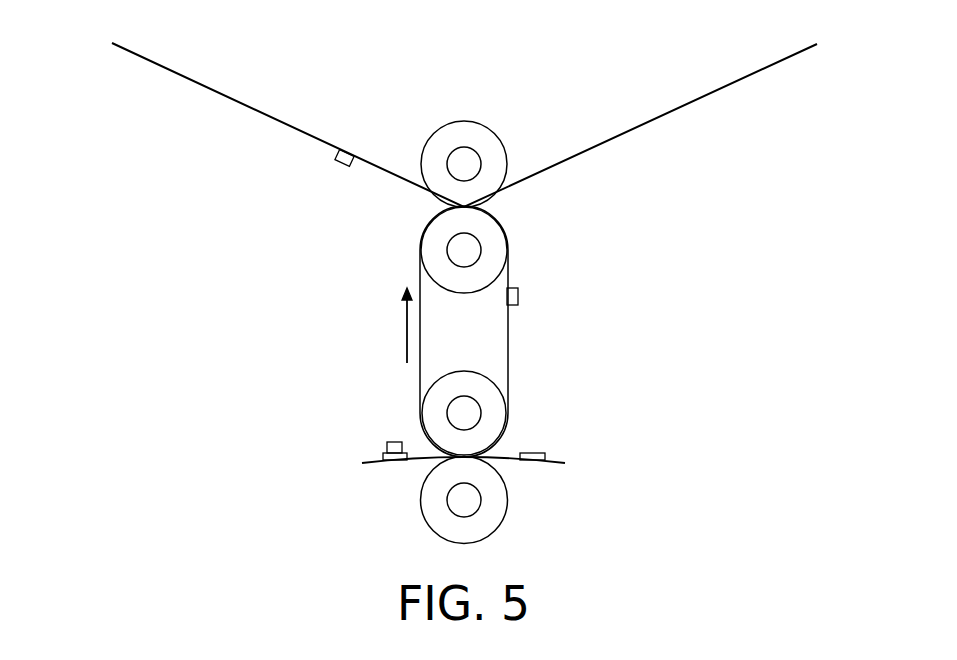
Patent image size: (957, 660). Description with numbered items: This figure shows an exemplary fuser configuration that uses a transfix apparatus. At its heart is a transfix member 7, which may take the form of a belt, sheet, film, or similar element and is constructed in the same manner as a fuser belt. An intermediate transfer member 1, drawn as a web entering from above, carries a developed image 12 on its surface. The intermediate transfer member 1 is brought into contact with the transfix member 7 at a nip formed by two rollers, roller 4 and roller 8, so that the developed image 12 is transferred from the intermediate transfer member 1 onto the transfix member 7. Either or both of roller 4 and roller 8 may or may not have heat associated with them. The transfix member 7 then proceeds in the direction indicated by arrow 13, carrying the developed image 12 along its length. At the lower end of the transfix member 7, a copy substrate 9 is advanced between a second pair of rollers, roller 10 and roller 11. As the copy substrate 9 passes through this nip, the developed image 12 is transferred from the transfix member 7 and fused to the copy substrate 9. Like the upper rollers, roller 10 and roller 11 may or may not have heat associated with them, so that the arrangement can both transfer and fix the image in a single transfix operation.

The intermediate transfer member 1 is at (278, 120).
The roller 4 is at (473, 122).
The transfix member 7 is at (507, 357).
The roller 8 is at (495, 241).
The copy substrate 9 is at (535, 453).
The roller 10 is at (495, 403).
The roller 11 is at (507, 498).
The developed image 12 is at (342, 164).
The arrow 13 is at (406, 330).